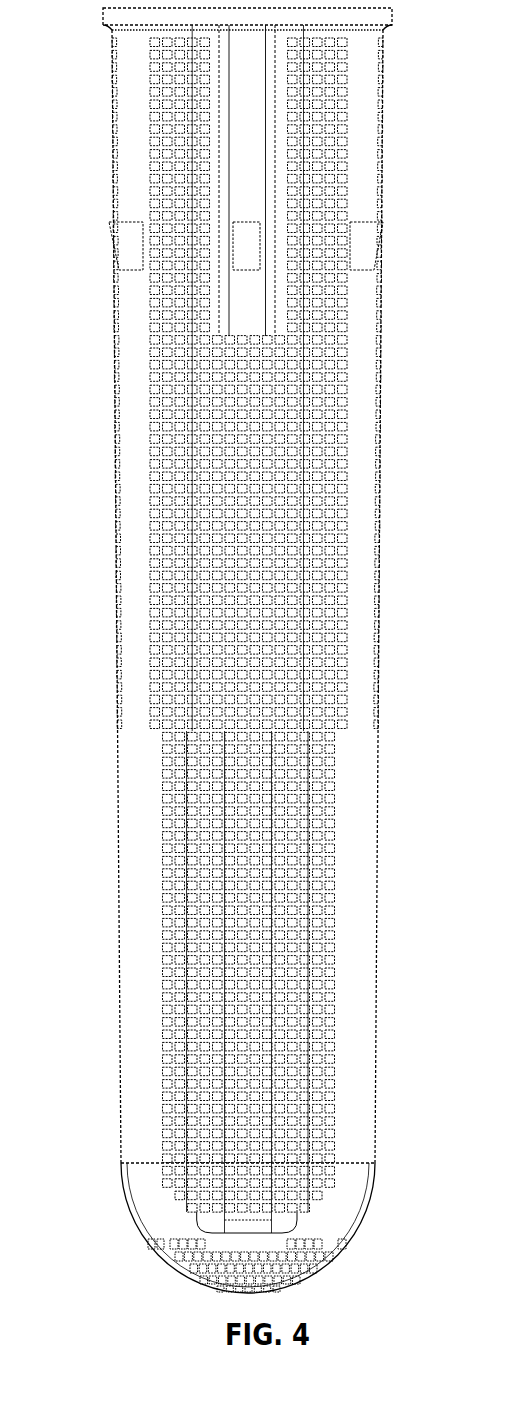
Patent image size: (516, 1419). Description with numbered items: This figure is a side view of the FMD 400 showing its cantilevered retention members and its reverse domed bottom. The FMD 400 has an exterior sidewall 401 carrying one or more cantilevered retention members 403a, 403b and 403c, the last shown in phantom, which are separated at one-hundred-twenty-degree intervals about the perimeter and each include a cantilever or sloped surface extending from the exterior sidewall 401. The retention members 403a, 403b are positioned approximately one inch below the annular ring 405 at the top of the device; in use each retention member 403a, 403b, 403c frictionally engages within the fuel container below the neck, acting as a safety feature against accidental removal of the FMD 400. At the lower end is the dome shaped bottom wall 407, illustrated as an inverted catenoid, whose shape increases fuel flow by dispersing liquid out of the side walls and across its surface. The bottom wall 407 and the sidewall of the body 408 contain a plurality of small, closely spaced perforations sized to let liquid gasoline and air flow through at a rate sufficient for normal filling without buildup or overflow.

The FMD 400 is at (255, 655).
The exterior sidewall 401 is at (358, 772).
The cantilevered retention member 403a is at (133, 248).
The cantilevered retention member 403b is at (373, 234).
The cantilevered retention member 403c is at (250, 220).
The annular ring 405 is at (380, 27).
The dome shaped bottom wall 407 is at (282, 1258).
The body 408 is at (290, 552).